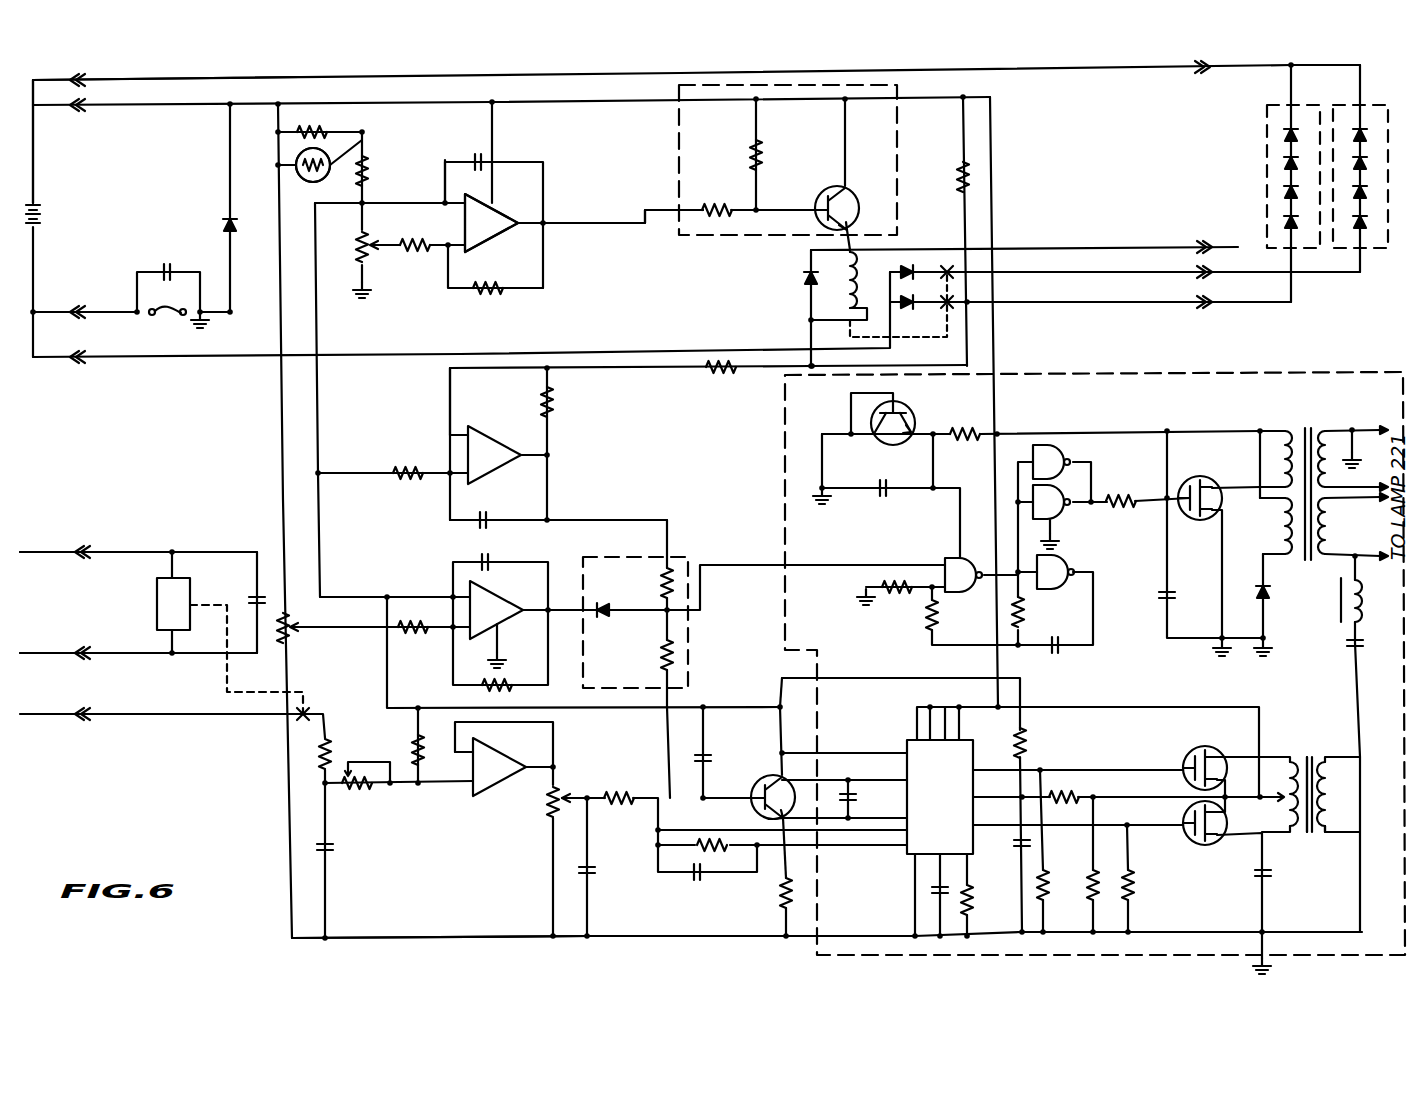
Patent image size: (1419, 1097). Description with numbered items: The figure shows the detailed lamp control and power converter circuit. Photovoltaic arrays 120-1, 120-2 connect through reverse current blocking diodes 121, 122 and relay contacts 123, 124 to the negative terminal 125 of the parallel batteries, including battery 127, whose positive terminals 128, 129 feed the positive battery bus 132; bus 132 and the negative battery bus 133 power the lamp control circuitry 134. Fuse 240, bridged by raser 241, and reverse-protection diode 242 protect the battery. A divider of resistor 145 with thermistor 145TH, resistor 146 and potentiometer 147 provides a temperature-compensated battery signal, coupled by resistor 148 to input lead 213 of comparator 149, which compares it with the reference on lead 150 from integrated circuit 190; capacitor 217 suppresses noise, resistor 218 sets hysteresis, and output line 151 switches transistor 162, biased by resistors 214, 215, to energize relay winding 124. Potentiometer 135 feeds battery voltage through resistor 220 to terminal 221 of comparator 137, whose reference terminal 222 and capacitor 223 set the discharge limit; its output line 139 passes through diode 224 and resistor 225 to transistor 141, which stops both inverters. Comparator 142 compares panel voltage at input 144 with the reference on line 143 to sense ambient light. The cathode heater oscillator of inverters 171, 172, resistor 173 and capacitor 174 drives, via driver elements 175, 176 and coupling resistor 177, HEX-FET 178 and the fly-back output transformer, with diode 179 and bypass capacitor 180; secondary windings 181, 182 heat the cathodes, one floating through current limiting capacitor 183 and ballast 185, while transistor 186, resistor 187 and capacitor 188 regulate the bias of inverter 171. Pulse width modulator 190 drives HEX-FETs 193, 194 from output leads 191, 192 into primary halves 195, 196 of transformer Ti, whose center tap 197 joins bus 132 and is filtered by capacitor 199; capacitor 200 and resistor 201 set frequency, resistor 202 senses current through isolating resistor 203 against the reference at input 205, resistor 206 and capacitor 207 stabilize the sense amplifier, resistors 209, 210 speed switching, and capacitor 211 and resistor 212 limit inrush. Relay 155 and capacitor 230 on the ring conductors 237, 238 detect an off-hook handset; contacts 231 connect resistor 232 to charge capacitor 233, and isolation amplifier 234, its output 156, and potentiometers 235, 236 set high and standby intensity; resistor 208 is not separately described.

The photo voltaic array 120-1 is at (1266, 135).
The photo voltaic array 120-2 is at (1385, 248).
The reverse current blocking diode 121 is at (905, 265).
The reverse current blocking diode 122 is at (912, 310).
The relay contact 123 is at (950, 265).
The disconnect relay 124 is at (840, 290).
The negative bus or ground terminal 125 is at (33, 265).
The battery 127 is at (34, 192).
The positive terminal 128 is at (33, 150).
The positive terminal 129 is at (166, 78).
The positive battery bus 132 is at (645, 104).
The negative battery bus 133 is at (706, 938).
The lamp control circuitry 134 is at (1175, 373).
The potentiometer 135 is at (298, 625).
The comparator 137 is at (490, 600).
The output line 139 is at (576, 625).
The transistor 141 is at (765, 775).
The comparator 142 is at (485, 440).
The input line 143 is at (458, 470).
The input 144 is at (450, 412).
The resistor 145 is at (332, 130).
The thermistor 145TH is at (328, 178).
The resistor 146 is at (365, 167).
The potentiometer 147 is at (362, 262).
The resistor 148 is at (417, 257).
The comparator 149 is at (507, 215).
The reference voltage input lead 150 is at (447, 196).
The output line 151 is at (615, 223).
The relay 155 is at (178, 595).
The amplifier output 156 is at (545, 765).
The transistor 162 is at (833, 190).
The inverter amplifier element 171 is at (958, 590).
The inverter amplifier element 172 is at (1058, 565).
The resistor 173 is at (1025, 612).
The capacitor 174 is at (1060, 648).
The driver element 175 is at (1052, 448).
The driver element 176 is at (1060, 480).
The coupling resistor 177 is at (1112, 490).
The HEX-FET transistor 178 is at (1222, 505).
The diode 179 is at (1270, 598).
The capacitor 180 is at (1170, 592).
The secondary winding 181 is at (1330, 430).
The secondary winding 182 is at (1330, 520).
The current limiting capacitor 183 is at (1352, 645).
The ballast 185 is at (1352, 590).
The transistor 186 is at (878, 445).
The resistor 187 is at (965, 425).
The capacitor 188 is at (885, 496).
The pulse width controlled modulator integrated circuit 190 is at (953, 811).
The output lead 191 is at (1065, 770).
The output lead 192 is at (1050, 825).
The HEX-FET transistor 193 is at (1195, 748).
The HEX-FET transistor 194 is at (1210, 845).
The upper half of primary winding 195 is at (1285, 775).
The lower half of primary winding 196 is at (1295, 835).
The center tap 197 is at (1262, 740).
The filter capacitor 199 is at (1268, 880).
The capacitor 200 is at (950, 890).
The resistor 201 is at (975, 905).
The resistor 202 is at (1100, 875).
The isolating resistor 203 is at (1075, 795).
The input 205 is at (848, 825).
The resistor 206 is at (722, 845).
The capacitor 207 is at (705, 872).
The resistor 208 is at (1028, 745).
The resistor 209 is at (1132, 900).
The resistor 210 is at (1047, 900).
The capacitor 211 is at (852, 790).
The resistor 212 is at (800, 900).
The input lead 213 is at (470, 245).
The resistor 214 is at (762, 157).
The resistor 215 is at (716, 222).
The capacitor 217 is at (490, 160).
The resistor 218 is at (484, 295).
The resistor 220 is at (425, 635).
The terminal 221 is at (453, 670).
The reference voltage terminal 222 is at (460, 585).
The capacitor 223 is at (490, 560).
The diode 224 is at (605, 615).
The resistor 225 is at (725, 372).
The capacitor 230 is at (260, 590).
The contacts 231 is at (305, 712).
The resistor 232 is at (333, 745).
The capacitor 233 is at (335, 848).
The operational amplifier 234 is at (478, 795).
The potentiometer 235 is at (370, 785).
The potentiometer 236 is at (550, 815).
The ring conductor 237 is at (90, 552).
The ring conductor 238 is at (96, 652).
The fuse 240 is at (166, 319).
The raser 241 is at (173, 270).
The diode 242 is at (226, 220).
The transformer Ti is at (1330, 760).